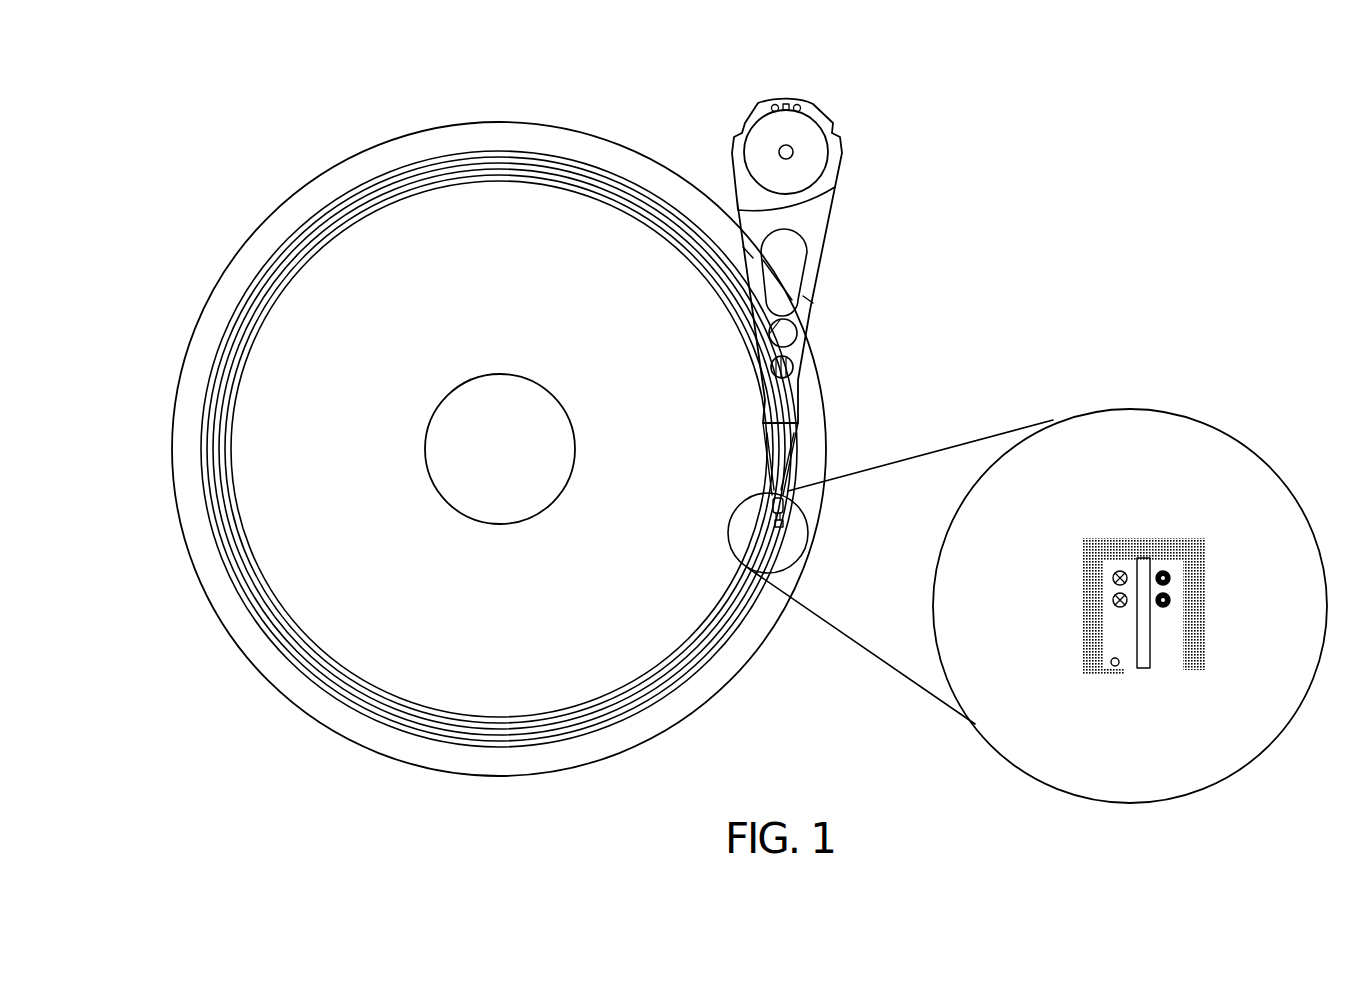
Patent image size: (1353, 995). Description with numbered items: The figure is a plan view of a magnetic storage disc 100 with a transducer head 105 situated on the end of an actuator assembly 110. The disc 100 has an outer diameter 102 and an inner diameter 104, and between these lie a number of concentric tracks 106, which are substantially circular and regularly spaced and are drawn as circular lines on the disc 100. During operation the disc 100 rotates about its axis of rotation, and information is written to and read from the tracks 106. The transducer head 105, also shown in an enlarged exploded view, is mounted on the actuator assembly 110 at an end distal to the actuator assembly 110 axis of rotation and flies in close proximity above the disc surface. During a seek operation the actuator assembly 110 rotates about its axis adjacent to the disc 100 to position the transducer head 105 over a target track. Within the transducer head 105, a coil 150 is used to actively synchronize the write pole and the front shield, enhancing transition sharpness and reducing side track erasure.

The disc 100 is at (330, 791).
The outer diameter 102 is at (565, 118).
The inner diameter 104 is at (551, 360).
The transducer head 105 is at (790, 517).
The concentric tracks 106 is at (380, 172).
The actuator assembly 110 is at (813, 303).
The coil 150 is at (1112, 658).